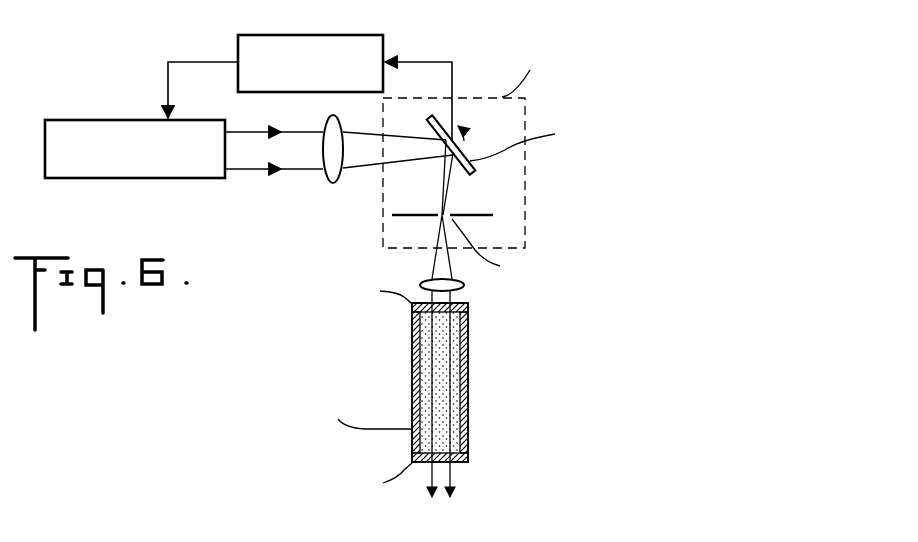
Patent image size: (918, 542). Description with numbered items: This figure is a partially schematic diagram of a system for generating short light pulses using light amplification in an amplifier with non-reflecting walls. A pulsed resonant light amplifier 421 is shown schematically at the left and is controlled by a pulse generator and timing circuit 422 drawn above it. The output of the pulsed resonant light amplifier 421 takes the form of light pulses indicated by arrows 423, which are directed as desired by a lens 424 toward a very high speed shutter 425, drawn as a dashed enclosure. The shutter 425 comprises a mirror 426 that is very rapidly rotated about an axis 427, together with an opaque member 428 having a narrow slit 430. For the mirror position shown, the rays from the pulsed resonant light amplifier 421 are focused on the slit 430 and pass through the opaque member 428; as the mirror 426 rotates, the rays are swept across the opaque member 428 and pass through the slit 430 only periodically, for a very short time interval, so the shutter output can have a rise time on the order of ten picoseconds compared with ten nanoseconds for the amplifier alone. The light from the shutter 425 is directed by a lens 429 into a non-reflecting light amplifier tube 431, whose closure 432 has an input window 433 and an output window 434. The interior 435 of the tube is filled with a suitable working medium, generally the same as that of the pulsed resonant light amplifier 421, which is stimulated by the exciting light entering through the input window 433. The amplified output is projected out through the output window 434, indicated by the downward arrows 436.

The pulsed resonant light amplifier 421 is at (127, 180).
The pulse generator and timing circuit 422 is at (327, 34).
The light pulses 423 is at (253, 130).
The lens 424 is at (330, 183).
The shutter 425 is at (527, 100).
The mirror 426 is at (472, 172).
The axis 427 is at (457, 150).
The opaque member 428 is at (494, 214).
The lens 429 is at (464, 288).
The slit 430 is at (437, 211).
The non-reflecting light amplifier tube 431 is at (472, 349).
The closure 432 is at (469, 399).
The input window 433 is at (472, 304).
The output window 434 is at (469, 463).
The interior 435 is at (421, 437).
The output beam 436 is at (451, 490).